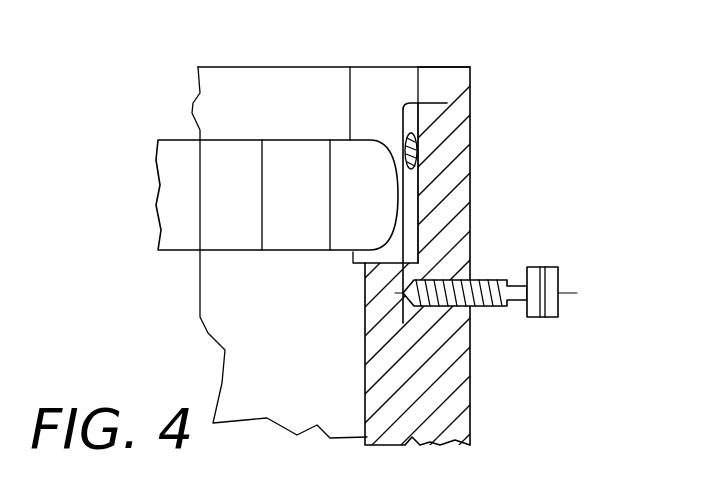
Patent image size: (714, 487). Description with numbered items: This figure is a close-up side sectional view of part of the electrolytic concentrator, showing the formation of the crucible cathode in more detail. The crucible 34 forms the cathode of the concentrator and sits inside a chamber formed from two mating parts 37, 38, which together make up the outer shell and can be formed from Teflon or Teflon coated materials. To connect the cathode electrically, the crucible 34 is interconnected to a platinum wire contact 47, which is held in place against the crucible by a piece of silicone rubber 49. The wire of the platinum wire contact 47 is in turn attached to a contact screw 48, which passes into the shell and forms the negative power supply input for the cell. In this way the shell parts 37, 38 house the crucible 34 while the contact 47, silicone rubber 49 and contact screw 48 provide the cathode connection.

The crucible 34 is at (190, 228).
The mating part 37 is at (470, 203).
The mating part 38 is at (473, 403).
The platinum wire contact 47 is at (397, 110).
The contact screw 48 is at (493, 310).
The silicone rubber 49 is at (418, 152).